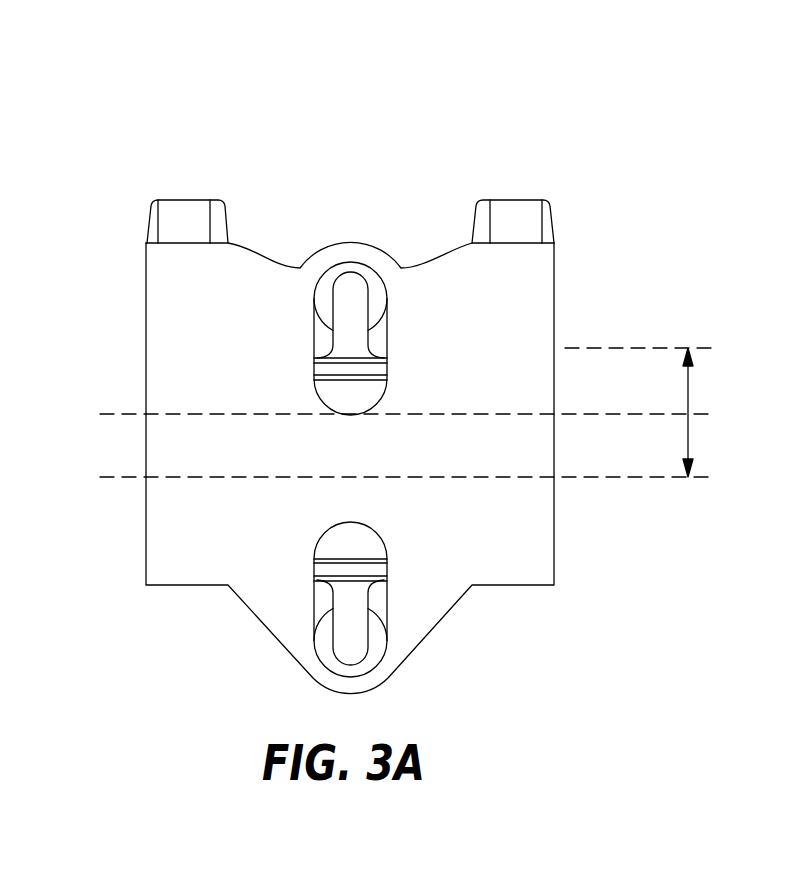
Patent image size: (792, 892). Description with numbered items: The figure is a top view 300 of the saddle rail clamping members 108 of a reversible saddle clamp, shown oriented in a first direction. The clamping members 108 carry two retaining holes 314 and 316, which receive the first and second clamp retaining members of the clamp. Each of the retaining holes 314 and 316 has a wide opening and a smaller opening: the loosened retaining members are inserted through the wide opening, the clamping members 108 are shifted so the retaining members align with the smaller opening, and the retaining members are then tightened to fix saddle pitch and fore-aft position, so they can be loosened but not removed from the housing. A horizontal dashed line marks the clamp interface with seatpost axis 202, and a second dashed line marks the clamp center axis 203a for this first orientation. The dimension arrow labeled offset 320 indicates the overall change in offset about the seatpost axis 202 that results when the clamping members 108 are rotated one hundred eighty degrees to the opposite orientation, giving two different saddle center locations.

The top view in first orientation 300 is at (237, 133).
The saddle rail clamping members 108 is at (232, 588).
The retaining hole 314 is at (350, 267).
The retaining hole 316 is at (376, 668).
The clamp interface with seatpost axis 202 is at (575, 412).
The clamp center axis 203a is at (575, 478).
The offset 320 is at (690, 407).